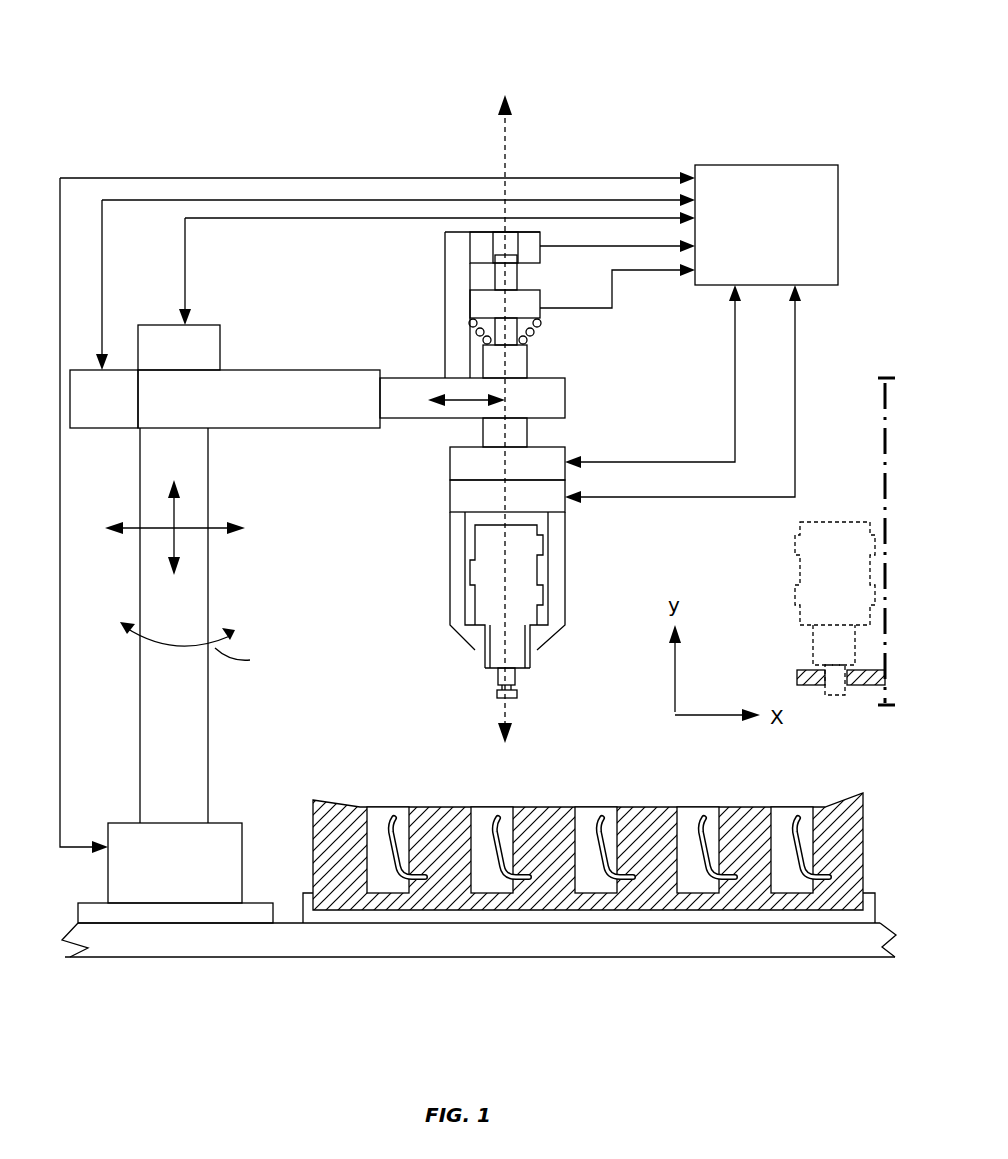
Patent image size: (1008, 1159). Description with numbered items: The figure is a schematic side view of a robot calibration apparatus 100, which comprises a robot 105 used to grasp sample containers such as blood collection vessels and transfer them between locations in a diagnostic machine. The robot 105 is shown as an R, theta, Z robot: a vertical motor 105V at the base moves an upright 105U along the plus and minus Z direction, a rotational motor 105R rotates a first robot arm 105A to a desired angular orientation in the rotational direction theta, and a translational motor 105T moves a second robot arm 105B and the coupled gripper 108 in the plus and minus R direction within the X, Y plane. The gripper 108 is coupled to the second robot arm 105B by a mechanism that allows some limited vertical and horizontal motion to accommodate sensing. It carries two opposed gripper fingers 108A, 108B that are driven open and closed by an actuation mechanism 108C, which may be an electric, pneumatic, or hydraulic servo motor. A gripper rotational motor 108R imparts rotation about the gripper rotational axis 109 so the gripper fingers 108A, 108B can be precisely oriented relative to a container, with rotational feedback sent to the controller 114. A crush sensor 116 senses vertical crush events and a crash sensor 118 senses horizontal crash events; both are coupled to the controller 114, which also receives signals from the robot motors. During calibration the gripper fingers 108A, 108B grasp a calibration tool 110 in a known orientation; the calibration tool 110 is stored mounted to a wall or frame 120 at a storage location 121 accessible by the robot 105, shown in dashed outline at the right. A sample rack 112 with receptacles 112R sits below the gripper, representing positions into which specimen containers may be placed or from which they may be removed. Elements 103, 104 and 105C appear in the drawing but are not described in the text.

The robot calibration apparatus 100 is at (336, 60).
The floor 103 is at (692, 958).
The base plate 104 is at (800, 925).
The robot 105 is at (610, 118).
The first robot arm 105A is at (283, 370).
The second robot arm 105B is at (405, 418).
The base carriage 105C is at (263, 903).
The rotational motor 105R is at (205, 325).
The translational motor 105T is at (125, 370).
The upright 105U is at (210, 742).
The vertical motor 105V is at (108, 880).
The gripper 108 is at (517, 558).
The gripper finger 108A is at (552, 637).
The gripper finger 108B is at (463, 633).
The actuation mechanism 108C is at (450, 500).
The gripper rotational motor 108R is at (450, 462).
The gripper rotational axis 109 is at (503, 153).
The calibration tool 110 is at (548, 598).
The sample rack 112 is at (598, 818).
The receptacle 112R is at (417, 828).
The controller 114 is at (770, 165).
The crush sensor 116 is at (540, 308).
The crash sensor 118 is at (540, 236).
The wall or frame 120 is at (885, 447).
The storage location 121 is at (775, 597).